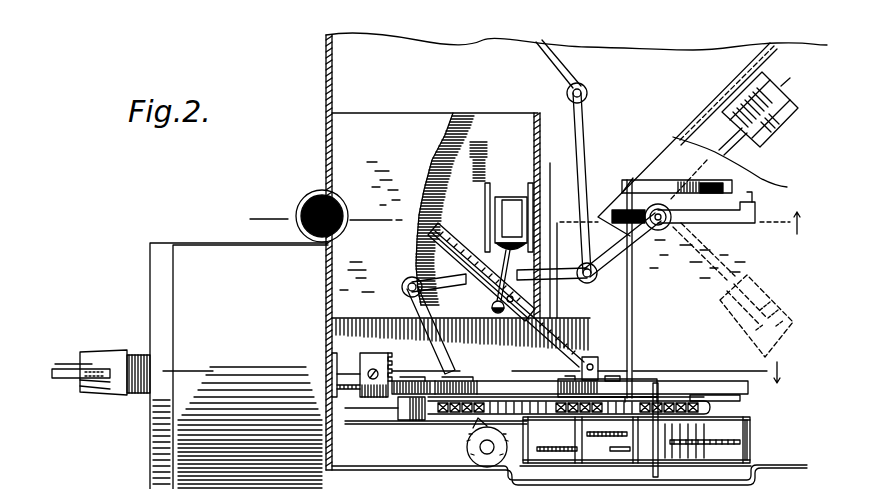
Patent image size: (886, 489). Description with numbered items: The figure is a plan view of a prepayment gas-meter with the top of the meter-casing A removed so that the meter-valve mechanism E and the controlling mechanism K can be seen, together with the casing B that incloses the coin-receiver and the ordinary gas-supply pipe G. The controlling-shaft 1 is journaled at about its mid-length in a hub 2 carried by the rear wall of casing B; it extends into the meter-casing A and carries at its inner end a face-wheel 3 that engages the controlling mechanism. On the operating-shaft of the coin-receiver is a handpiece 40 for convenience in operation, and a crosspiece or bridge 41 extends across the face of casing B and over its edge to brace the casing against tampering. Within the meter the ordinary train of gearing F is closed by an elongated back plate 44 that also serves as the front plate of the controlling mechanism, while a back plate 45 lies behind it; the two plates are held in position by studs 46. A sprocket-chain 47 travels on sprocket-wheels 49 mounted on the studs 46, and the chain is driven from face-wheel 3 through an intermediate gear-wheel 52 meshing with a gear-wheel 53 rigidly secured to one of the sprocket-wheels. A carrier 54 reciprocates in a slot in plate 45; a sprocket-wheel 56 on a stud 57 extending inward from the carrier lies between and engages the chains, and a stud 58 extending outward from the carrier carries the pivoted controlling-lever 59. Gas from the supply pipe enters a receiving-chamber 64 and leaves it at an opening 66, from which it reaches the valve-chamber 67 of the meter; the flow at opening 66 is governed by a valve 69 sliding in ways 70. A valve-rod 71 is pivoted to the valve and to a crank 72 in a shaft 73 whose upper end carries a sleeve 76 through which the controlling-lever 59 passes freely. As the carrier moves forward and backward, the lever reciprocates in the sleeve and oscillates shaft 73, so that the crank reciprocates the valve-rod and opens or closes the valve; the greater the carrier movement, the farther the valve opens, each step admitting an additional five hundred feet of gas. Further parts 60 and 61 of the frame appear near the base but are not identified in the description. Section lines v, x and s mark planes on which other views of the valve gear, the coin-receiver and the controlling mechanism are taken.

The controlling-shaft 1 is at (348, 379).
The hub 2 is at (333, 362).
The face-wheel 3 is at (376, 375).
The handpiece 40 is at (89, 372).
The crosspiece or bridge 41 is at (155, 383).
The back plate of the meter-train 44 is at (386, 424).
The back plate of the controlling mechanism 45 is at (493, 390).
The studs 46 is at (398, 406).
The sprocket-chain 47 is at (534, 398).
The sprocket-wheels 49 is at (447, 418).
The gear-wheel 52 is at (400, 409).
The gear-wheel 53 is at (458, 390).
The carrier 54 is at (607, 389).
The sprocket-wheel 56 is at (635, 390).
The stud 57 is at (613, 377).
The stud 58 is at (598, 358).
The controlling-lever 59 is at (568, 345).
The frame end 60 is at (712, 417).
The base plate 61 is at (737, 425).
The receiving-chamber 64 is at (464, 209).
The opening 66 is at (497, 268).
The valve-chamber 67 is at (756, 304).
The valve 69 is at (511, 223).
The ways 70 is at (472, 210).
The valve-rod 71 is at (509, 262).
The crank 72 is at (466, 341).
The shaft 73 is at (439, 292).
The sleeve 76 is at (541, 311).
The meter-casing A is at (576, 259).
The coin-receiver casing B is at (239, 366).
The meter-valve mechanism E is at (652, 161).
The meter-train F is at (636, 440).
The gas-supply pipe G is at (322, 207).
The controlling mechanism K is at (719, 400).
The section line s s is at (758, 108).
The section line v v is at (524, 223).
The section line x x is at (416, 369).